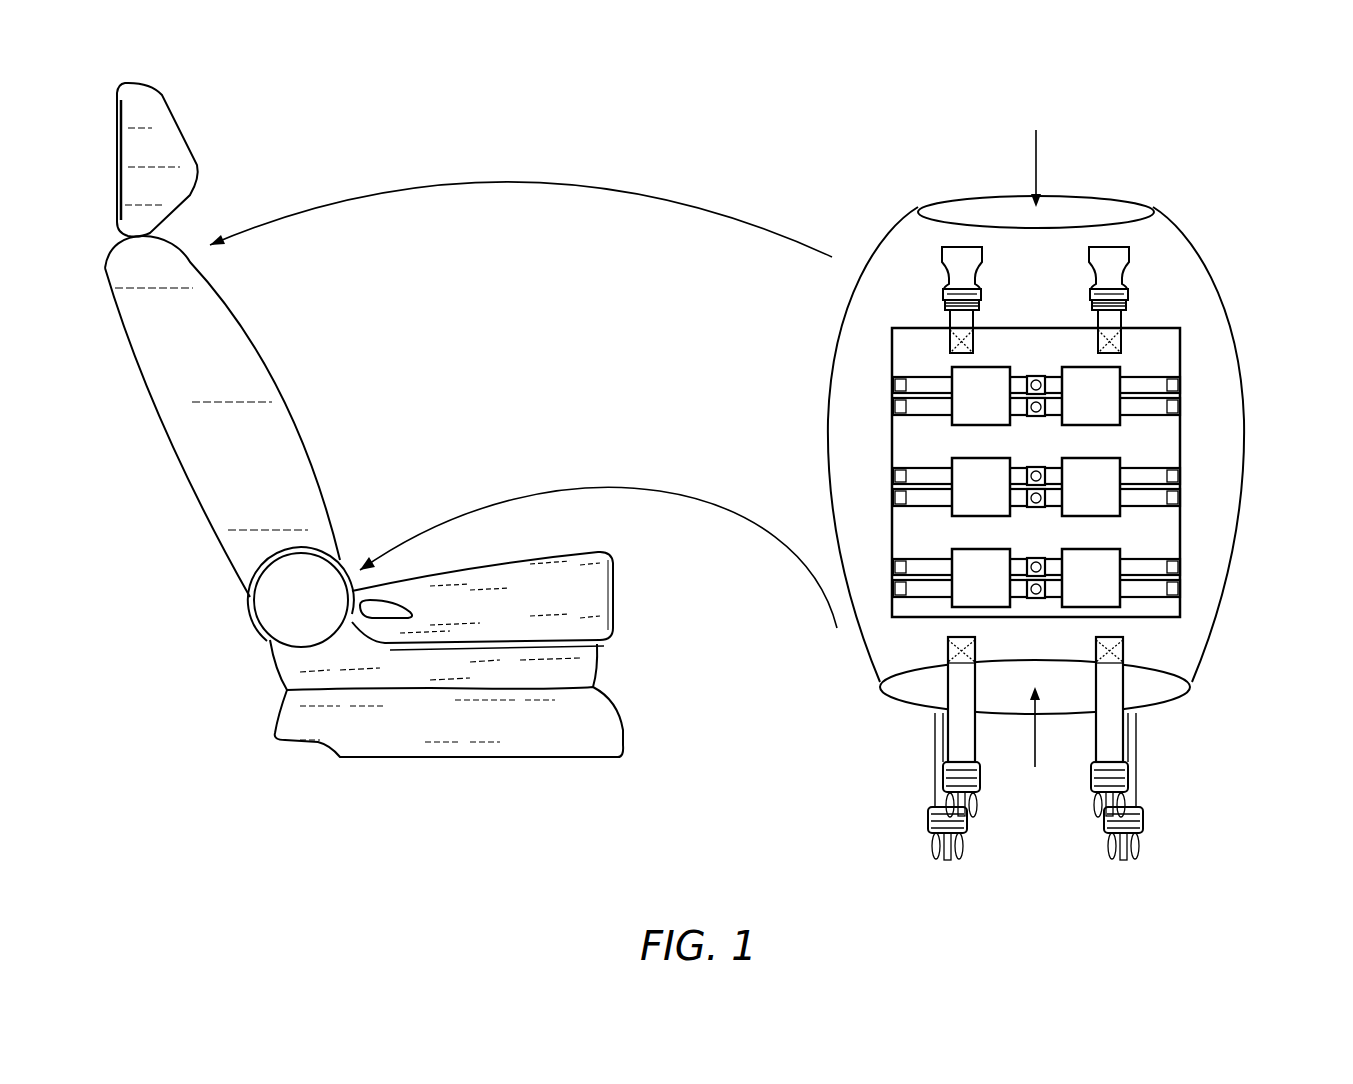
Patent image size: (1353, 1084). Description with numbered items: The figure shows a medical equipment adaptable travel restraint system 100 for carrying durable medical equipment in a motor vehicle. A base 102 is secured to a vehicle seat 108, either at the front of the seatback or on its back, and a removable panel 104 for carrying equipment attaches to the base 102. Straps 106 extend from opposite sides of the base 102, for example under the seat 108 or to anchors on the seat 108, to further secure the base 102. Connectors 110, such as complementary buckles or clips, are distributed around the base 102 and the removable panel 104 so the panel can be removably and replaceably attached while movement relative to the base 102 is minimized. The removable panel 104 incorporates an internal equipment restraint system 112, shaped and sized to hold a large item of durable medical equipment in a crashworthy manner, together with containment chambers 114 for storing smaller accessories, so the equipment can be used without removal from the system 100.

The medical equipment adaptable travel restraint system 100 is at (1183, 152).
The base 102 is at (903, 260).
The removable panel 104 is at (1157, 353).
The straps 106 is at (1112, 733).
The vehicle seat 108 is at (195, 440).
The connectors 110 is at (1120, 270).
The internal equipment restraint system 112 is at (1091, 578).
The containment chambers 114 is at (1118, 461).